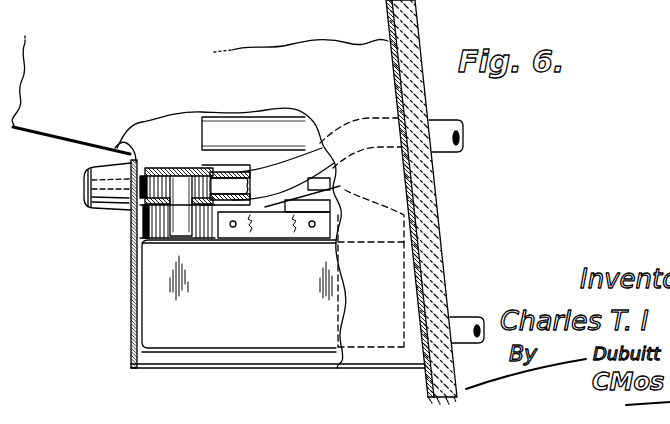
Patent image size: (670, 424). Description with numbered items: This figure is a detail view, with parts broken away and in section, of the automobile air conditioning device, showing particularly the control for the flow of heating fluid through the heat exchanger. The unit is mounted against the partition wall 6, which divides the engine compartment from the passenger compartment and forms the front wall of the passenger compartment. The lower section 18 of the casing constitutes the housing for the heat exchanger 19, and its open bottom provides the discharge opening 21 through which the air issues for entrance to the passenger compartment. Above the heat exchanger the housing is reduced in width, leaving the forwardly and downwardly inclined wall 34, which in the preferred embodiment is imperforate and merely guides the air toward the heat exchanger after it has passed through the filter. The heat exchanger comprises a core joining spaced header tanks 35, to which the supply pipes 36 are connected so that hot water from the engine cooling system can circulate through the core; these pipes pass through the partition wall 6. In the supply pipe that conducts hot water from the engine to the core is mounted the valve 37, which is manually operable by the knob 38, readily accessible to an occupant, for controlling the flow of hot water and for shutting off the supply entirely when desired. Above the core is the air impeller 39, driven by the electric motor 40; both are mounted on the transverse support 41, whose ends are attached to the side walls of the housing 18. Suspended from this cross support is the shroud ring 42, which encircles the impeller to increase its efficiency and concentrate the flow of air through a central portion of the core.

The partition wall 6 is at (432, 198).
The lower section 18 is at (70, 142).
The heat exchanger 19 is at (261, 325).
The discharge opening 21 is at (200, 370).
The inclined wall 34 is at (46, 132).
The header tanks 35 is at (182, 292).
The supply pipes 36 is at (438, 120).
The valve 37 is at (170, 166).
The knob 38 is at (83, 182).
The air impeller 39 is at (340, 204).
The electric motor 40 is at (278, 143).
The transverse support 41 is at (318, 186).
The shroud ring 42 is at (140, 229).